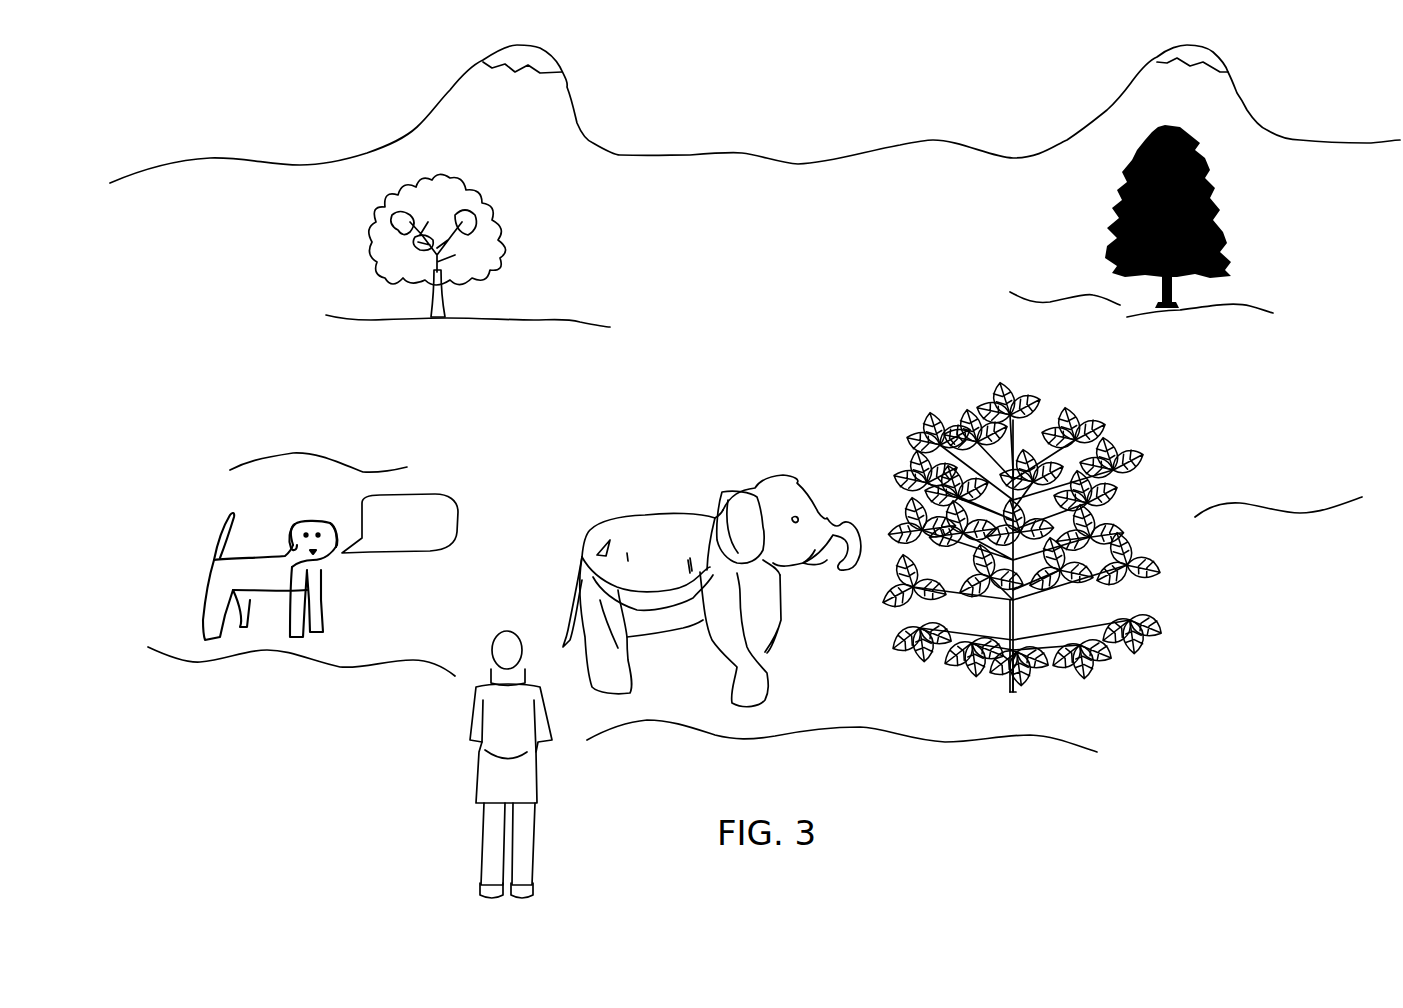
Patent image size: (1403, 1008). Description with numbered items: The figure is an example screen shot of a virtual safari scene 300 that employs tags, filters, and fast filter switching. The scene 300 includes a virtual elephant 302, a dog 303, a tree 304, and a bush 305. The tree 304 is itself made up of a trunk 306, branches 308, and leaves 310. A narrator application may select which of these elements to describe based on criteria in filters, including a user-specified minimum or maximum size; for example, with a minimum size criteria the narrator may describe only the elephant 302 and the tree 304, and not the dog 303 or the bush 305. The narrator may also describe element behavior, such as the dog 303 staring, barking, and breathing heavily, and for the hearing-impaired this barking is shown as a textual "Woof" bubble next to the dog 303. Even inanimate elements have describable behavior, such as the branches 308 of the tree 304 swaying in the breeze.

The scene 300 is at (800, 352).
The virtual elephant 302 is at (660, 513).
The dog 303 is at (217, 532).
The tree 304 is at (1033, 512).
The bush 305 is at (427, 297).
The trunk 306 is at (1007, 683).
The branches 308 is at (985, 430).
The leaves 310 is at (923, 440).